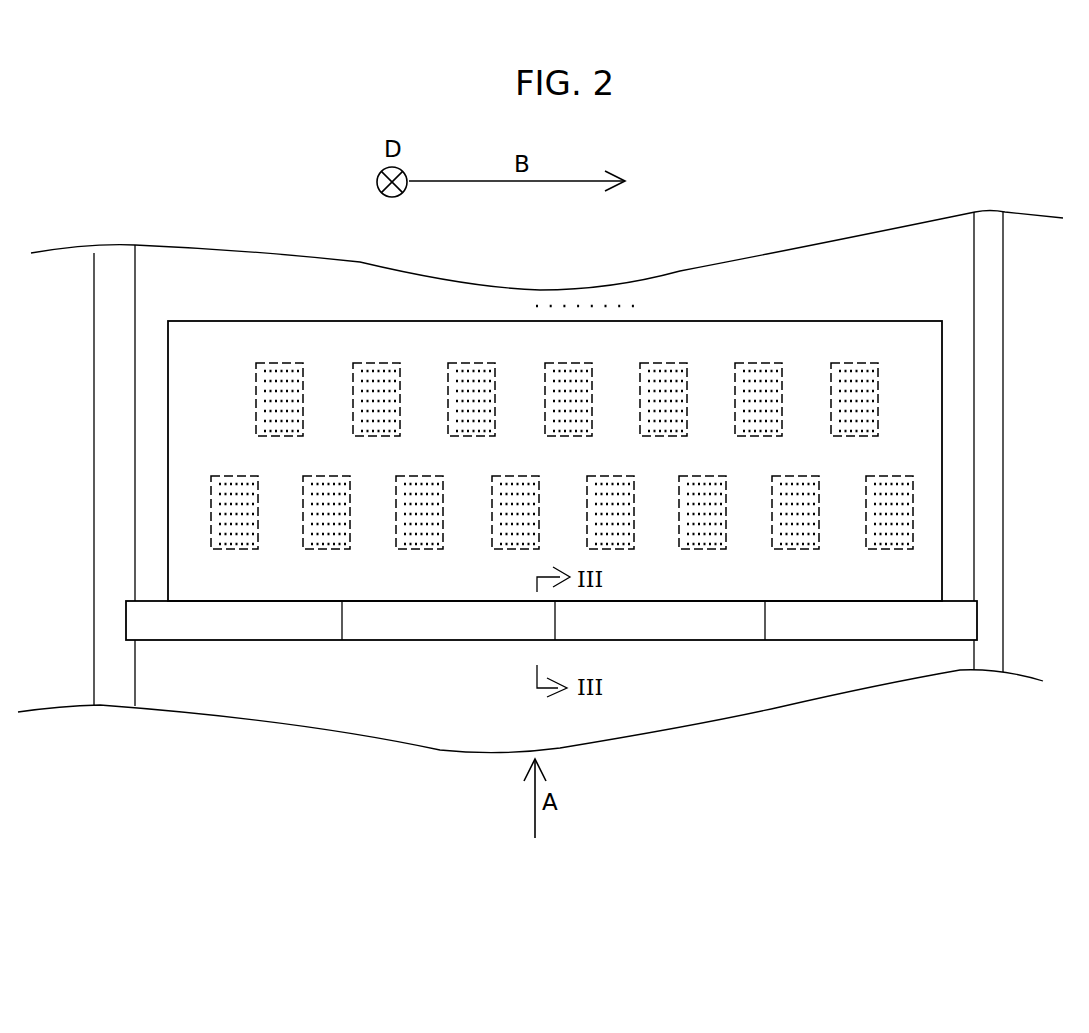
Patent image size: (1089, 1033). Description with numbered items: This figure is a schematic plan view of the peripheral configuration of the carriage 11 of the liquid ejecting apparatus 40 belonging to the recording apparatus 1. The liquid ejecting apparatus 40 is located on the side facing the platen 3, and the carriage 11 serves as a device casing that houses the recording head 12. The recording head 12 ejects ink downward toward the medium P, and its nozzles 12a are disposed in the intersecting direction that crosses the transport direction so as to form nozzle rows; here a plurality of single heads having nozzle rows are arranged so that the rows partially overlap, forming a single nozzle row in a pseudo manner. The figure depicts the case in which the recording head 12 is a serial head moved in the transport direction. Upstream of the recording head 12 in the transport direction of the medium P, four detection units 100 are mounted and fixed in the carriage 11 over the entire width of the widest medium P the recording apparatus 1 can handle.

The recording apparatus 1 is at (1033, 175).
The platen 3 is at (988, 231).
The medium P is at (945, 240).
The carriage 11 is at (850, 321).
The recording head 12 is at (557, 394).
The nozzles 12a is at (270, 391).
The liquid ejecting apparatus 40 is at (368, 296).
The detection unit 100 is at (237, 624).